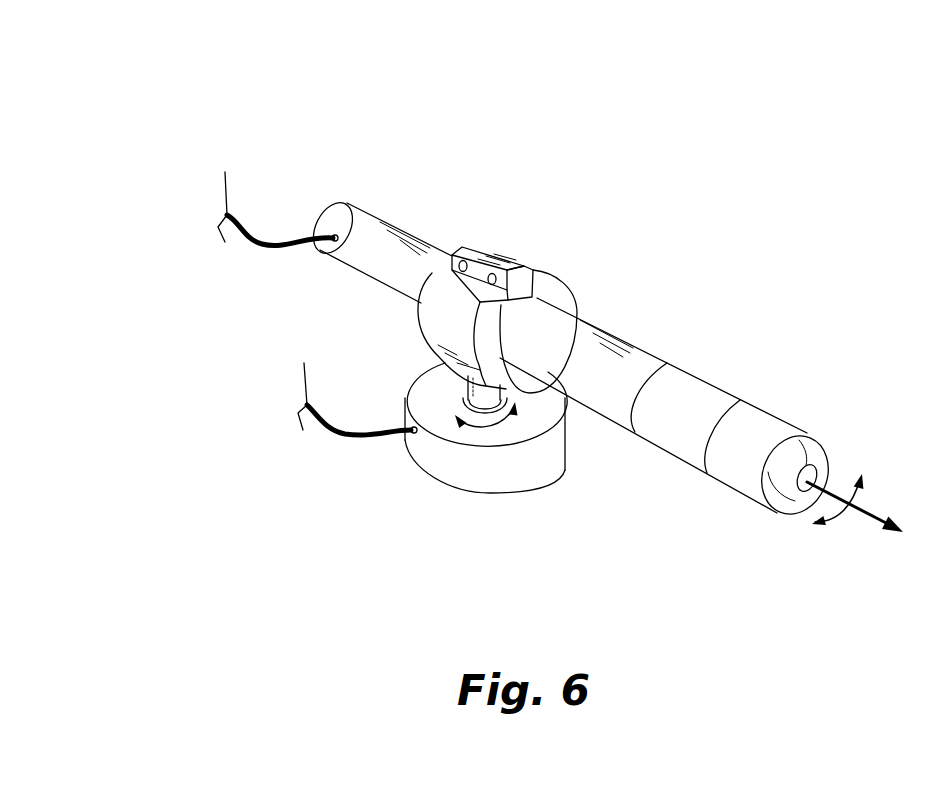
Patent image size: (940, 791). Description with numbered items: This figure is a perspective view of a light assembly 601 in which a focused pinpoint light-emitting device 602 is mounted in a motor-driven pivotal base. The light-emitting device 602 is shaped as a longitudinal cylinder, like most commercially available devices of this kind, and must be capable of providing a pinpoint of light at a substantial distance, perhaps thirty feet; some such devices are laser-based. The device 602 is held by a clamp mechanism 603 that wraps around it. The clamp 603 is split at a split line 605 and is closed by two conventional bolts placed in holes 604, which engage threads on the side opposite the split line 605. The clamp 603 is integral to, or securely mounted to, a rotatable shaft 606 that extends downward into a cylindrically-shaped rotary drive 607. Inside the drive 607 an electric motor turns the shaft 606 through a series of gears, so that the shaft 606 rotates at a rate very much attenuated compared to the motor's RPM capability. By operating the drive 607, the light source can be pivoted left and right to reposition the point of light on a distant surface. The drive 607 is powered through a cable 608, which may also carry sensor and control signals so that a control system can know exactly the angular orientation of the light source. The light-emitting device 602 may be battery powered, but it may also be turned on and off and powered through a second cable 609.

The light assembly 601 is at (606, 180).
The focused pinpoint light-emitting device 602 is at (353, 223).
The clamp mechanism 603 is at (480, 255).
The holes 604 is at (488, 280).
The split line 605 is at (534, 288).
The rotatable shaft 606 is at (425, 398).
The cylindrically-shaped rotary drive 607 is at (557, 448).
The cable 608 is at (342, 438).
The cable 609 is at (262, 250).